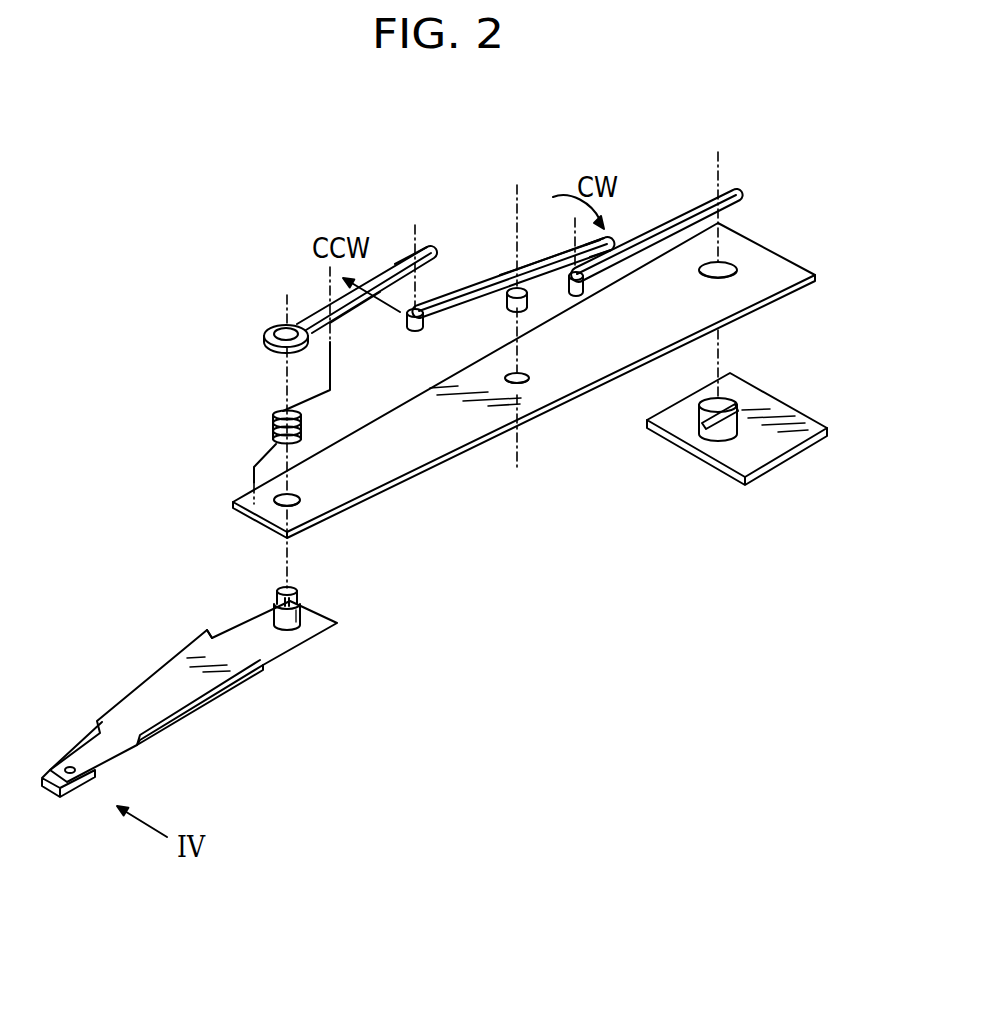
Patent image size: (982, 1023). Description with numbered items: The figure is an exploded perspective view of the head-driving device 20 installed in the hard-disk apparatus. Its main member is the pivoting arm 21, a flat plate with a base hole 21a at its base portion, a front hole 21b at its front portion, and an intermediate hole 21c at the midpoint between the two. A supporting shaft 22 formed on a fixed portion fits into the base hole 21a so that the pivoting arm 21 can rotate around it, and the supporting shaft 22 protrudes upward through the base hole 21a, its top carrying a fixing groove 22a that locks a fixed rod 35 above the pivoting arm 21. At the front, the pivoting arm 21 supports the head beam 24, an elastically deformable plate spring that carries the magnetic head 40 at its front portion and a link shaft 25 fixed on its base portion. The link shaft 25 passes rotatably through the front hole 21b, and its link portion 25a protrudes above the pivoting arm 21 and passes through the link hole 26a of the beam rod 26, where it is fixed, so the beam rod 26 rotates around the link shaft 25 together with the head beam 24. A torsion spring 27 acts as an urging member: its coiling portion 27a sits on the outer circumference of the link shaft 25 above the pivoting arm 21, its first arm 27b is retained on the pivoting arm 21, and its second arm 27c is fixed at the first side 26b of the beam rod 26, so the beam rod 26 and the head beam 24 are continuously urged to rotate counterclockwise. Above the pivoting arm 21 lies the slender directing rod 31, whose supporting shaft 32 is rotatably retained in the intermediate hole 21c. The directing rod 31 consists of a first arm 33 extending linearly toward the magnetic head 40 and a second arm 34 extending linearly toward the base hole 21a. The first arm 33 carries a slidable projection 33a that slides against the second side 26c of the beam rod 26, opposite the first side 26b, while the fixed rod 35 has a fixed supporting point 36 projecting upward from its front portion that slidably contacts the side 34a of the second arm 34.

The head-driving device 20 is at (536, 650).
The pivoting arm 21 is at (440, 440).
The base hole 21a is at (725, 266).
The front hole 21b is at (300, 500).
The intermediate hole 21c is at (525, 382).
The supporting shaft 22 is at (722, 432).
The fixing groove 22a is at (722, 400).
The head beam 24 is at (272, 650).
The link shaft 25 is at (300, 625).
The link portion 25a is at (277, 595).
The beam rod 26 is at (316, 312).
The link hole 26a is at (280, 325).
The first side 26b is at (357, 310).
The second side 26c is at (400, 256).
The torsion spring 27 is at (294, 443).
The coiling portion 27a is at (305, 430).
The first arm 27b is at (253, 476).
The second arm 27c is at (332, 378).
The directing rod 31 is at (517, 286).
The supporting shaft 32 is at (533, 300).
The first arm 33 is at (467, 295).
The slidable projection 33a is at (418, 300).
The second arm 34 is at (553, 260).
The side of second arm 34a is at (607, 252).
The fixed rod 35 is at (686, 212).
The fixed supporting point 36 is at (582, 290).
The magnetic head 40 is at (77, 792).